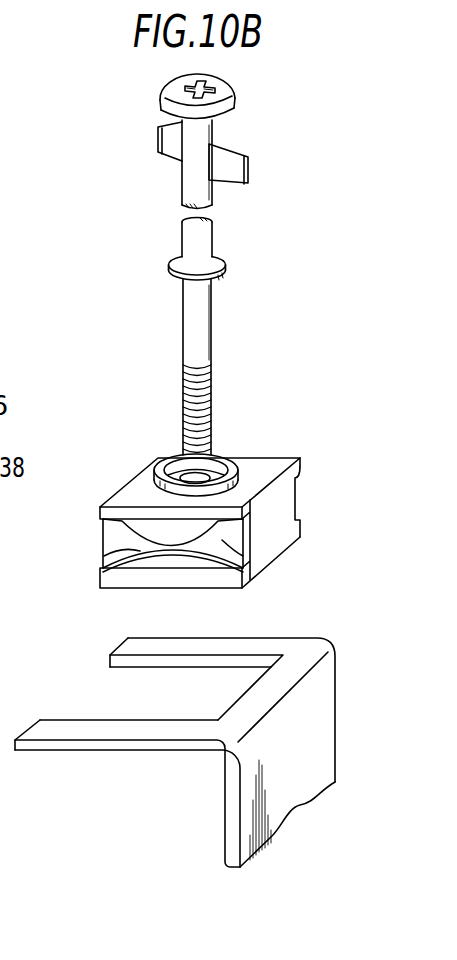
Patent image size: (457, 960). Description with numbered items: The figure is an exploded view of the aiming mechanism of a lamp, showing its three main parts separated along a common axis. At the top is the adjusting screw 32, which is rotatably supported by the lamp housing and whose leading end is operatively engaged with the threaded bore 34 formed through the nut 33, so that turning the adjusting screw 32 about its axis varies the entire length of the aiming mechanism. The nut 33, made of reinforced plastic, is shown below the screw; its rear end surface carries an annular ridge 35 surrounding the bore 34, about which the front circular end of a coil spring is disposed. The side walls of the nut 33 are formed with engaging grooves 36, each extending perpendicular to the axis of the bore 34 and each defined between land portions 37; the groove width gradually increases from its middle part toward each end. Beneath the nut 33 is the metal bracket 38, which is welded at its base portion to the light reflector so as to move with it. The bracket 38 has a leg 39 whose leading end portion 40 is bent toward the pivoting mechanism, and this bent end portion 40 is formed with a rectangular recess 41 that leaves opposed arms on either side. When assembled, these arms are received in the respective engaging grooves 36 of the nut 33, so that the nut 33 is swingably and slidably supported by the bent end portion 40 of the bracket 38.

The adjusting screw 32 is at (213, 306).
The nut 33 is at (314, 504).
The threaded bore 34 is at (196, 476).
The annular ridge 35 is at (157, 463).
The engaging grooves 36 is at (306, 480).
The land portions 37 is at (103, 537).
The metal bracket 38 is at (345, 662).
The leg 39 is at (293, 811).
The bent end portion 40 is at (82, 747).
The rectangular recess 41 is at (232, 663).